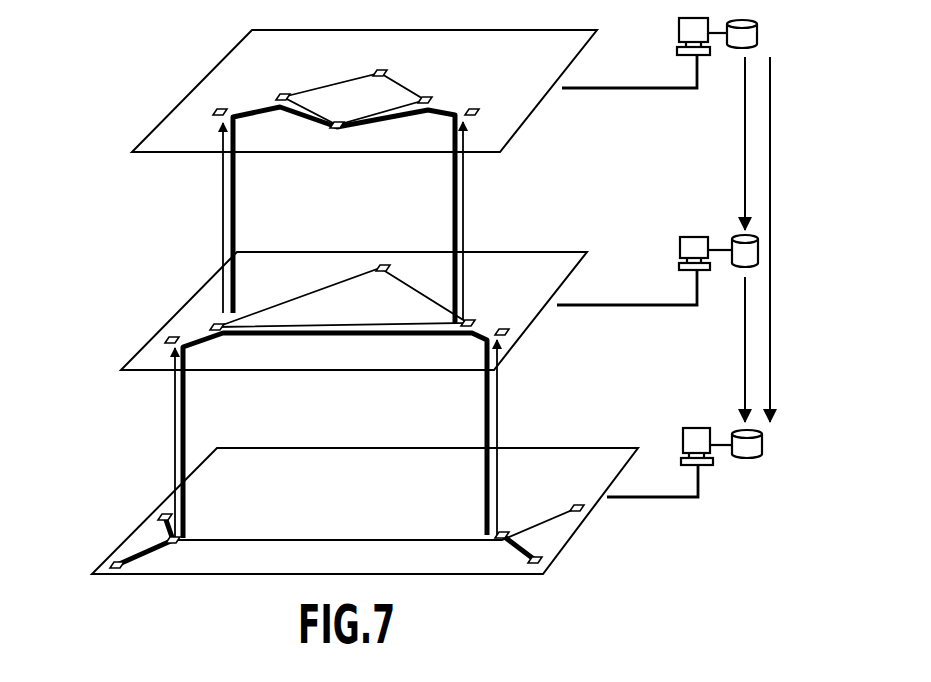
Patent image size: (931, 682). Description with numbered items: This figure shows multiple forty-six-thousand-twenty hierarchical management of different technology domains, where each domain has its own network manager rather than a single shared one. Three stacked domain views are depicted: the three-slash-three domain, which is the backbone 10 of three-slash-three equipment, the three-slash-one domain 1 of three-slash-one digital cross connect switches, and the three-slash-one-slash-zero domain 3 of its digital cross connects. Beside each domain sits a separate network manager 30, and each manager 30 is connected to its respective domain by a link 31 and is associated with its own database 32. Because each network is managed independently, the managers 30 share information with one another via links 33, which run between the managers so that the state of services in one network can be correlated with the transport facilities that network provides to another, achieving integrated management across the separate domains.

The backbone 10 is at (158, 125).
The 3/1 domain 1 is at (141, 356).
The 3/1/0 domain 3 is at (123, 542).
The 46020 network manager 30 is at (678, 33).
The link 31 is at (645, 89).
The database 32 is at (757, 33).
The link 33 is at (770, 153).